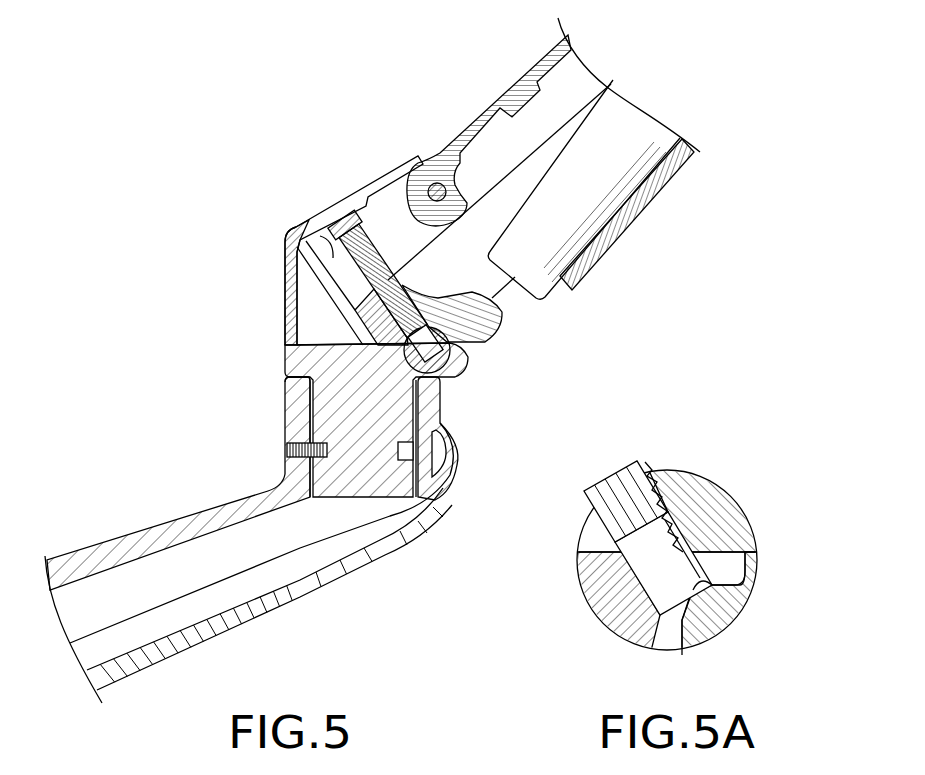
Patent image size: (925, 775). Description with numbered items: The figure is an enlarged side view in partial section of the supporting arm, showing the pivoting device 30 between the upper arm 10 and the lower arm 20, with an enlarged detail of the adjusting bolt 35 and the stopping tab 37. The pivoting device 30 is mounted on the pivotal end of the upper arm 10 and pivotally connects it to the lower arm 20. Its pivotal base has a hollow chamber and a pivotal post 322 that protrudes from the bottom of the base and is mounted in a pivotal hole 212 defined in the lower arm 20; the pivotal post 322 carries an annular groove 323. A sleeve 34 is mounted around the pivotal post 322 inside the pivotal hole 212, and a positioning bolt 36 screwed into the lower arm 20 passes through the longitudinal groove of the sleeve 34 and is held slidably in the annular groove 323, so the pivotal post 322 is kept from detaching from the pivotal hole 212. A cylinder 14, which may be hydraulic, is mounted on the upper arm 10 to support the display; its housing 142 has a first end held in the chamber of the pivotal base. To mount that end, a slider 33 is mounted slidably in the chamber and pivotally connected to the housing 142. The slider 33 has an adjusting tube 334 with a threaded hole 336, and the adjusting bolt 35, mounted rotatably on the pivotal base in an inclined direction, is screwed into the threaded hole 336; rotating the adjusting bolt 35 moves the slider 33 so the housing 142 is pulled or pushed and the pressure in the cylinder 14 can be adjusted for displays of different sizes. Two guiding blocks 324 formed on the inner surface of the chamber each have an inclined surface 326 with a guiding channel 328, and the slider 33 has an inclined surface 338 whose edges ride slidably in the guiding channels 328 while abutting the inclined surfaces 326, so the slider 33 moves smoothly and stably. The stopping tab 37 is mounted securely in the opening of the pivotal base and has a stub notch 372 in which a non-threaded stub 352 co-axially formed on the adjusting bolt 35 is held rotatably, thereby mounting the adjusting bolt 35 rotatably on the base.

In FIG. 5, the upper arm 10 is at (512, 68).
In FIG. 5, the cylinder 14 is at (625, 195).
In FIG. 5, the housing 142 is at (547, 197).
In FIG. 5, the lower arm 20 is at (135, 514).
In FIG. 5, the pivoting device 30 is at (355, 176).
In FIG. 5, the slider 33 is at (345, 322).
In FIG. 5, the sleeve 34 is at (418, 409).
In FIG. 5, the adjusting bolt 35 is at (333, 214).
In FIG. 5, the positioning bolt 36 is at (290, 447).
In FIG. 5A, the stopping tab 37 is at (700, 627).
In FIG. 5, the pivotal hole 212 is at (313, 410).
In FIG. 5, the pivotal post 322 is at (357, 470).
In FIG. 5, the annular groove 323 is at (405, 452).
In FIG. 5, the guiding block 324 is at (310, 268).
In FIG. 5, the inclined surface 326 is at (327, 247).
In FIG. 5, the guiding channel 328 is at (333, 284).
In FIG. 5, the adjusting tube 334 is at (405, 290).
In FIG. 5, the threaded hole 336 is at (407, 340).
In FIG. 5A, the threaded hole 336 is at (673, 507).
In FIG. 5, the inclined surface 338 is at (360, 344).
In FIG. 5A, the non-threaded stub 352 is at (650, 567).
In FIG. 5A, the stub notch 372 is at (707, 587).